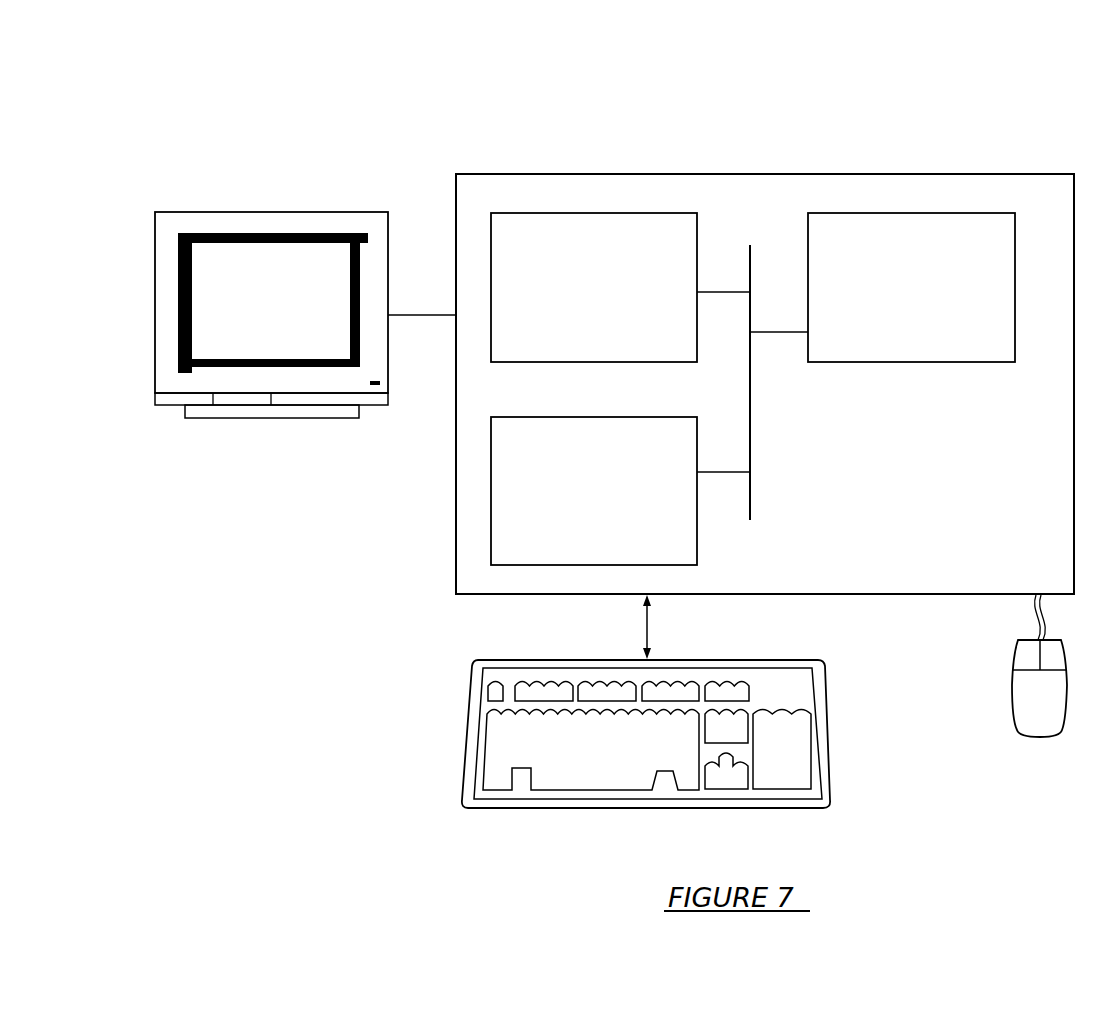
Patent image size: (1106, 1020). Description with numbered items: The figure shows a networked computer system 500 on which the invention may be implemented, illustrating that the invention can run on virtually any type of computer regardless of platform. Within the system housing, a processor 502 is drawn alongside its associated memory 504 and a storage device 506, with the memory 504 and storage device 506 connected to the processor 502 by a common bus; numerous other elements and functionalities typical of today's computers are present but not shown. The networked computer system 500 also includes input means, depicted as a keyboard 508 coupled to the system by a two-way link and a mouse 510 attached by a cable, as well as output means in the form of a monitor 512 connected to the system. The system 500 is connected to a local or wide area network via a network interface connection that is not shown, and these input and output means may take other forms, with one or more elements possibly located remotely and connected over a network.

The networked computer system 500 is at (962, 61).
The processor 502 is at (908, 299).
The memory 504 is at (576, 299).
The storage device 506 is at (572, 504).
The keyboard 508 is at (565, 772).
The mouse 510 is at (1021, 710).
The monitor 512 is at (252, 319).